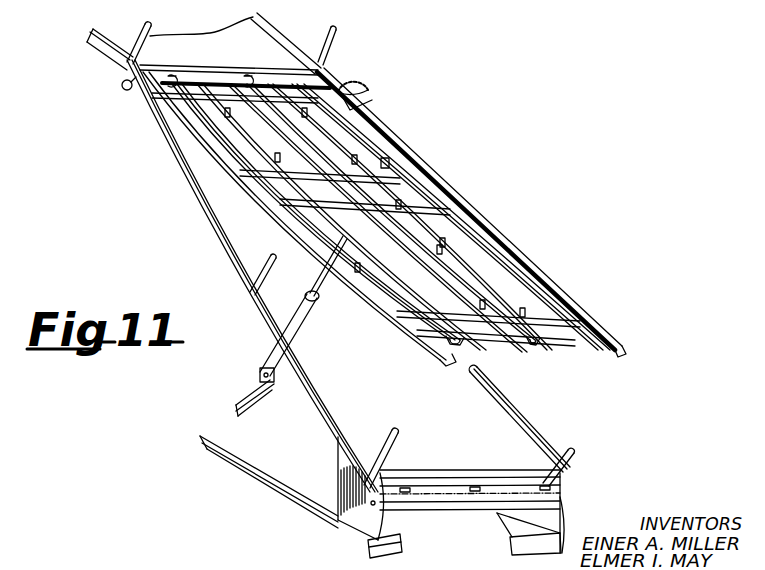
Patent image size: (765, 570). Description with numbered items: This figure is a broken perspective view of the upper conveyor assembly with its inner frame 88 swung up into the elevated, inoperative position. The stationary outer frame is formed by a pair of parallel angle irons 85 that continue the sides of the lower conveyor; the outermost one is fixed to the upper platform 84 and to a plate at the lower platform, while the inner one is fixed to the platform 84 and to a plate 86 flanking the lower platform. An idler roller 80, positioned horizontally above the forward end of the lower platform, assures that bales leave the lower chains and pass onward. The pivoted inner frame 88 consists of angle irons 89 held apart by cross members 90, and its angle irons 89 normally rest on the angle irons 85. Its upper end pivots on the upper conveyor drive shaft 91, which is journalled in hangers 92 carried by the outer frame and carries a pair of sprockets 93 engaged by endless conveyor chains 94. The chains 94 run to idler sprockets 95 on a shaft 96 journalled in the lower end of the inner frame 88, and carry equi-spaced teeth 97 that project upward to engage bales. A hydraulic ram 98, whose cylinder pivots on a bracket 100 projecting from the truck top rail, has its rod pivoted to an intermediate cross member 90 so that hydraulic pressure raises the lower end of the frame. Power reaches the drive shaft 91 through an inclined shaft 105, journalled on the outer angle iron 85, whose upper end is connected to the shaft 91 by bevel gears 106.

The idler roller 80 is at (437, 510).
The platform 84 is at (123, 43).
The angle irons 85 is at (322, 402).
The plate 86 is at (340, 522).
The inner frame 88 is at (508, 238).
The angle irons 89 is at (440, 186).
The cross members 90 is at (365, 108).
The upper conveyor drive shaft 91 is at (300, 72).
The hangers 92 is at (127, 91).
The sprockets 93 is at (236, 80).
The endless conveyor chains 94 is at (300, 243).
The idler sprockets 95 is at (477, 350).
The shaft 96 is at (548, 345).
The teeth 97 is at (352, 152).
The hydraulic ram 98 is at (308, 323).
The bracket 100 is at (260, 403).
The inclined shaft 105 is at (390, 163).
The bevel gears 106 is at (354, 73).